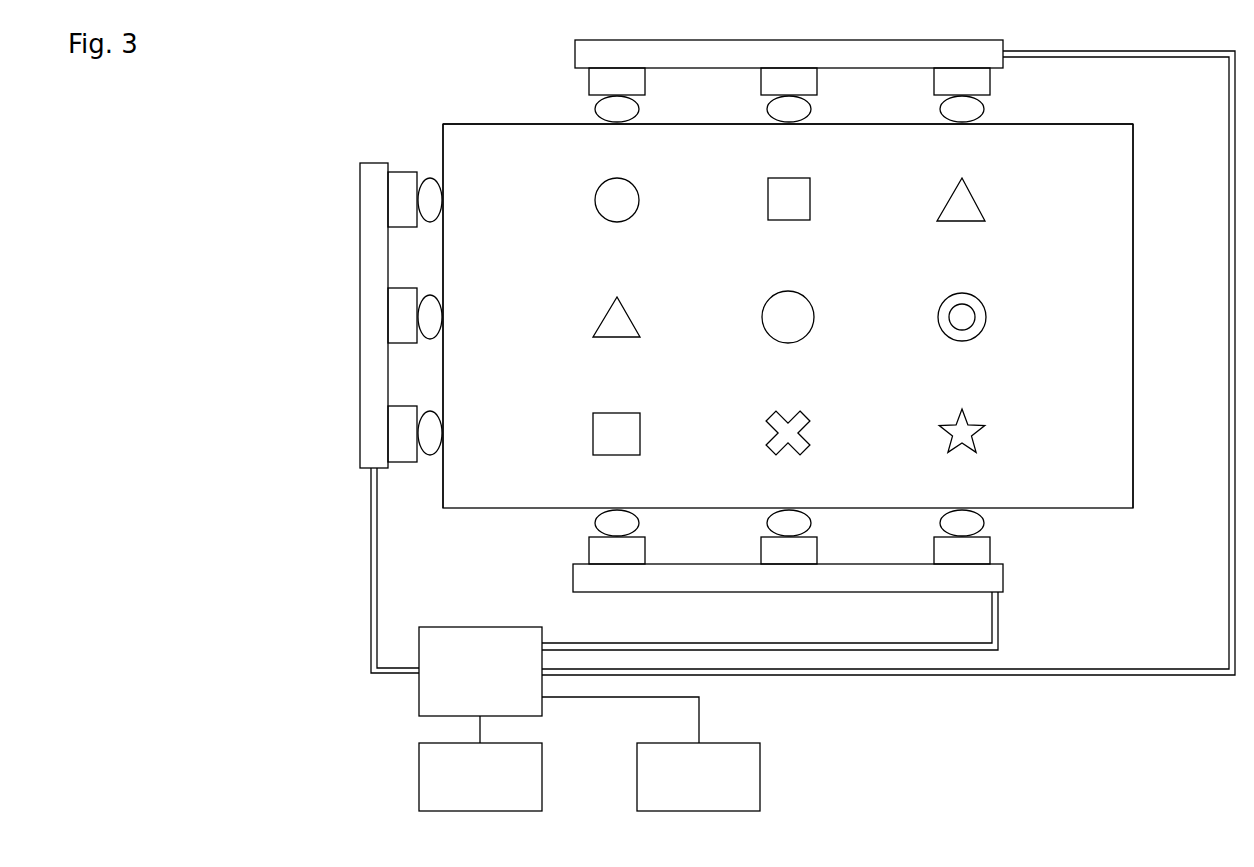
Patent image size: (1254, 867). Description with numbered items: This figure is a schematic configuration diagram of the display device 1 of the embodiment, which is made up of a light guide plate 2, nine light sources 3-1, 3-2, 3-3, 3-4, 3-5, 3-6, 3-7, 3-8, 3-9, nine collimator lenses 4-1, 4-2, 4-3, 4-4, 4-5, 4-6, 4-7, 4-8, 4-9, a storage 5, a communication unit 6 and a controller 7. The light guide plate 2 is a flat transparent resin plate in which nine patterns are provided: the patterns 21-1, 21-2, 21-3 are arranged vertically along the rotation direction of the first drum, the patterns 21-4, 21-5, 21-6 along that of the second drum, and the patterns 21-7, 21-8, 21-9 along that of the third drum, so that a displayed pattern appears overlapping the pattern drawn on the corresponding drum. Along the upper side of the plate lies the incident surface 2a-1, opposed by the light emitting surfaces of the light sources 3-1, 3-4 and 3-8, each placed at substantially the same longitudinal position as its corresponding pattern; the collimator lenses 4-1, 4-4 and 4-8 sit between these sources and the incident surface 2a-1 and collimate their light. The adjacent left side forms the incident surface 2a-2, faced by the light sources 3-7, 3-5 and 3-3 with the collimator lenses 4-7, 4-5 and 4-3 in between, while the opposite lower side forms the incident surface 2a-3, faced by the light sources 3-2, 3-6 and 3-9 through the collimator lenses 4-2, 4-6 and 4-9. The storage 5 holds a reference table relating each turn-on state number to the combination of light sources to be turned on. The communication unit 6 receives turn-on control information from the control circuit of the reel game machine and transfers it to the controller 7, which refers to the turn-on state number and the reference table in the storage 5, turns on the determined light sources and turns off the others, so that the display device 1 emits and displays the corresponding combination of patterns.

The display device 1 is at (1169, 743).
The light guide plate 2 is at (503, 508).
The incident surface 2a-1 is at (1097, 124).
The incident surface 2a-2 is at (441, 478).
The incident surface 2a-3 is at (1115, 509).
The light source 3-1 is at (645, 80).
The light source 3-2 is at (645, 550).
The light source 3-3 is at (402, 434).
The light source 3-4 is at (817, 80).
The light source 3-5 is at (402, 317).
The light source 3-6 is at (817, 550).
The light source 3-7 is at (402, 200).
The light source 3-8 is at (990, 80).
The light source 3-9 is at (990, 550).
The collimator lens 4-1 is at (639, 108).
The collimator lens 4-2 is at (639, 523).
The collimator lens 4-3 is at (428, 411).
The collimator lens 4-4 is at (811, 108).
The collimator lens 4-5 is at (428, 295).
The collimator lens 4-6 is at (811, 523).
The collimator lens 4-7 is at (428, 178).
The collimator lens 4-8 is at (984, 108).
The collimator lens 4-9 is at (984, 523).
The pattern 21-1 is at (639, 200).
The pattern 21-2 is at (630, 317).
The pattern 21-3 is at (640, 433).
The pattern 21-4 is at (810, 200).
The pattern 21-5 is at (814, 317).
The pattern 21-6 is at (810, 433).
The pattern 21-7 is at (975, 200).
The pattern 21-8 is at (986, 317).
The pattern 21-9 is at (984, 430).
The storage 5 is at (760, 795).
The communication unit 6 is at (419, 795).
The controller 7 is at (419, 697).